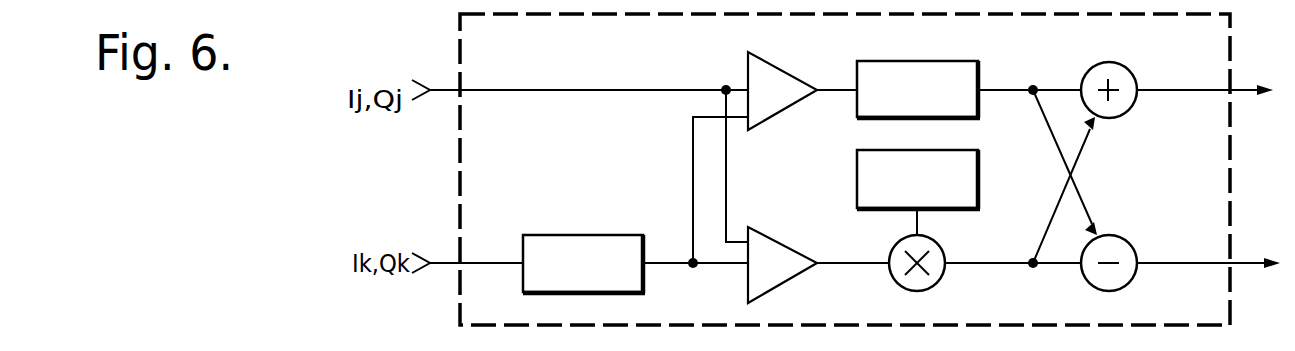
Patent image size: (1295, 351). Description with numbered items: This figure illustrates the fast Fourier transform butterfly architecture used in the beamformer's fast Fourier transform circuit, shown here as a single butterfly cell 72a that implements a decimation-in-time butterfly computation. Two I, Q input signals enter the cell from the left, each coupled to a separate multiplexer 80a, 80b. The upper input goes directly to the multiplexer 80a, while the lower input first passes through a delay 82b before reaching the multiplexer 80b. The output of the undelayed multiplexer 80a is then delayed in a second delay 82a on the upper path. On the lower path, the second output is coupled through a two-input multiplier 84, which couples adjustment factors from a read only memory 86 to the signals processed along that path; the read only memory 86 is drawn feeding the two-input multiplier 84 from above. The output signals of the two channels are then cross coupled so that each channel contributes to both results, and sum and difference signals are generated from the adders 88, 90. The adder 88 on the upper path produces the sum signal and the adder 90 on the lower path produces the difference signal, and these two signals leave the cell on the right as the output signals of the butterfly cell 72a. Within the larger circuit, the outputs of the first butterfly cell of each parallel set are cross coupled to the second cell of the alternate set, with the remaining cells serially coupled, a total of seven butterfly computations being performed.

The multiplexer 80a is at (788, 74).
The multiplexer 80b is at (788, 248).
The second delay 82a is at (978, 62).
The delay 82b is at (662, 223).
The two-input multiplier 84 is at (936, 284).
The read only memory 86 is at (978, 206).
The adder 88 is at (1134, 78).
The adder 90 is at (1130, 244).
The butterfly cell 72a is at (1232, 258).